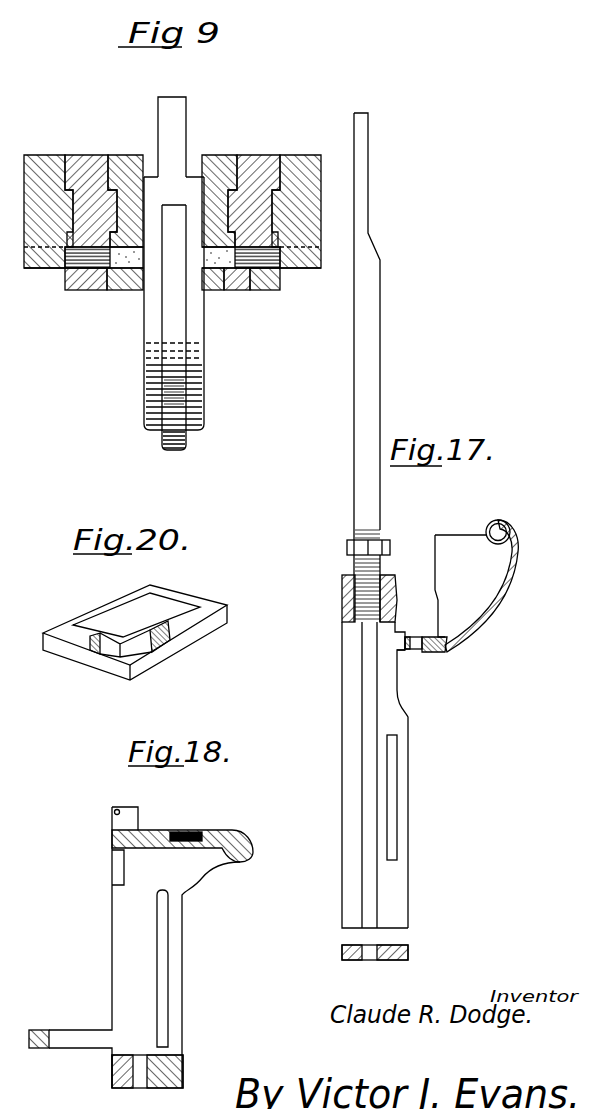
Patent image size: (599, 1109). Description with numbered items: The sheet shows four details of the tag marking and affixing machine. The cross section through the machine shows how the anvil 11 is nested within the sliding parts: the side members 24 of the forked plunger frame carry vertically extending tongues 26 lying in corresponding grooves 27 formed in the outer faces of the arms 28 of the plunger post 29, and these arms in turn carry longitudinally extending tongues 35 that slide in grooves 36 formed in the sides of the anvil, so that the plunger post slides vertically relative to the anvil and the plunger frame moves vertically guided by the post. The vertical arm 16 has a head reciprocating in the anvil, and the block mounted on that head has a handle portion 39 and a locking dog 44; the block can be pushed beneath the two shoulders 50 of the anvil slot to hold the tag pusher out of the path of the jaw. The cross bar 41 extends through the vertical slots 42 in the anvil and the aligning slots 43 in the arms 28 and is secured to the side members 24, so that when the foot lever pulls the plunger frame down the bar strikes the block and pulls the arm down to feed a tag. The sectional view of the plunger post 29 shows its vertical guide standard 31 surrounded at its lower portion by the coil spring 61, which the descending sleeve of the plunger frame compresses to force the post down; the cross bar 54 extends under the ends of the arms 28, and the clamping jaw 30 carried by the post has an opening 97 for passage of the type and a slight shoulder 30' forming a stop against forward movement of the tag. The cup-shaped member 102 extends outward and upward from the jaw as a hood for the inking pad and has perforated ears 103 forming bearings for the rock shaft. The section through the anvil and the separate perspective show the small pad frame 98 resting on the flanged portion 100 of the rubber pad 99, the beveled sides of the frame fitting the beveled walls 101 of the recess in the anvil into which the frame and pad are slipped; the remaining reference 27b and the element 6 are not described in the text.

In FIG. 18, the base arm block 6 is at (37, 1030).
In FIG. 9, the anvil 11 is at (193, 160).
In FIG. 9, the vertical arm 16 is at (168, 100).
In FIG. 9, the side members 24 is at (40, 156).
In FIG. 9, the tongues 26 is at (78, 172).
In FIG. 9, the grooves 27 is at (103, 188).
In FIG. 17, the grooves 27 is at (368, 710).
In FIG. 9, the sleeve portion 27b is at (113, 192).
In FIG. 9, the arms 28 is at (83, 262).
In FIG. 17, the arms 28 is at (343, 654).
In FIG. 17, the plunger post 29 is at (392, 578).
In FIG. 17, the clamping jaw 30 is at (447, 657).
In FIG. 17, the shoulder 30' is at (421, 667).
In FIG. 17, the vertical guide standard 31 is at (381, 352).
In FIG. 9, the tongues 35 is at (110, 258).
In FIG. 9, the grooves 36 is at (222, 165).
In FIG. 9, the handle portion 39 is at (206, 409).
In FIG. 9, the cross bar 41 is at (97, 262).
In FIG. 9, the vertical slots 42 is at (153, 349).
In FIG. 18, the vertical slots 42 is at (160, 941).
In FIG. 17, the slots 43 is at (392, 800).
In FIG. 9, the locking dog 44 is at (173, 318).
In FIG. 9, the shoulders 50 is at (175, 190).
In FIG. 17, the cross bar 54 is at (410, 950).
In FIG. 17, the coil spring 61 is at (347, 548).
In FIG. 17, the opening 97 is at (412, 637).
In FIG. 20, the pad frame 98 is at (165, 594).
In FIG. 18, the pad frame 98 is at (205, 832).
In FIG. 20, the pad 99 is at (122, 617).
In FIG. 18, the pad 99 is at (189, 832).
In FIG. 20, the flanged portion 100 is at (123, 663).
In FIG. 18, the beveled walls 101 is at (170, 832).
In FIG. 17, the cup-shaped member 102 is at (508, 590).
In FIG. 17, the perforated ears 103 is at (506, 520).